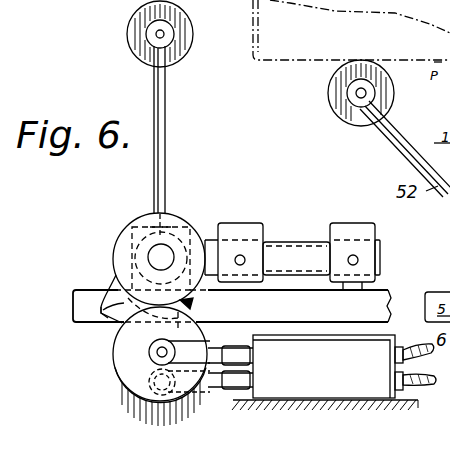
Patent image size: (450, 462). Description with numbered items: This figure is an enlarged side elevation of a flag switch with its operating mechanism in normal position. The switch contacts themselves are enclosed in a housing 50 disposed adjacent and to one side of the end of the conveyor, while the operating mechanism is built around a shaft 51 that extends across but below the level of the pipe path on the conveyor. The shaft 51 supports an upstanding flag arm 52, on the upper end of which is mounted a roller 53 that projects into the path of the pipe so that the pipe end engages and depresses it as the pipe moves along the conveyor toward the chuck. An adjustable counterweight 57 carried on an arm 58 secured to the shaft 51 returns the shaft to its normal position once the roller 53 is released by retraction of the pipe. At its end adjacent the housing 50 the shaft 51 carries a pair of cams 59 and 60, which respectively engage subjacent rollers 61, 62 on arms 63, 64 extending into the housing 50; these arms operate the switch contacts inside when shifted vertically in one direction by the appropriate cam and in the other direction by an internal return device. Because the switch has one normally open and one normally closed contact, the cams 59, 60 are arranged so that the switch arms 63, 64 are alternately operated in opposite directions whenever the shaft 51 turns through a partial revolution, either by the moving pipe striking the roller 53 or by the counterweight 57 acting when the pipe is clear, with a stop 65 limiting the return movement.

The housing 50 is at (344, 366).
The shaft 51 is at (155, 253).
The flag arm 52 is at (170, 138).
The roller 53 is at (184, 56).
The adjustable counterweight 57 is at (248, 215).
The arm 58 is at (296, 250).
The cam 59 is at (116, 313).
The cam 60 is at (206, 307).
The roller 61 is at (118, 351).
The roller 62 is at (126, 398).
The switch arm 63 is at (236, 356).
The switch arm 64 is at (234, 384).
The stop 65 is at (356, 288).